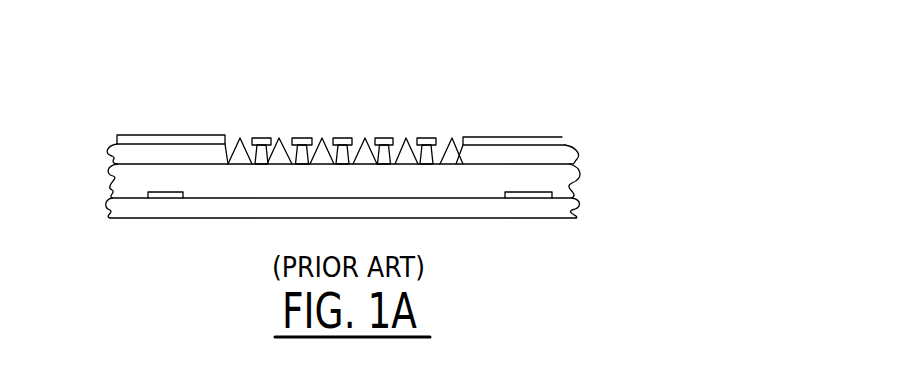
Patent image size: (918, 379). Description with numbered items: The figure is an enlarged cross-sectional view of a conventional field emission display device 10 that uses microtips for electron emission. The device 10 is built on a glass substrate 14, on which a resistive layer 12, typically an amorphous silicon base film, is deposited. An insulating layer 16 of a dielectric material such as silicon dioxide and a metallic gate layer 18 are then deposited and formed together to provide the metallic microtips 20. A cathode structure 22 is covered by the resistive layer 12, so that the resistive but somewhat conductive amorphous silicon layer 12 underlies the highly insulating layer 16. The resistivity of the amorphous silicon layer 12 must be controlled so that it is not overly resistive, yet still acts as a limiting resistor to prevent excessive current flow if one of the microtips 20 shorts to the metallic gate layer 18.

The field emission display device 10 is at (573, 90).
The resistive layer 12 is at (112, 182).
The glass substrate 14 is at (108, 205).
The insulating layer 16 is at (112, 152).
The metallic gate layer 18 is at (560, 143).
The metallic microtips 20 is at (365, 137).
The cathode structure 22 is at (163, 198).